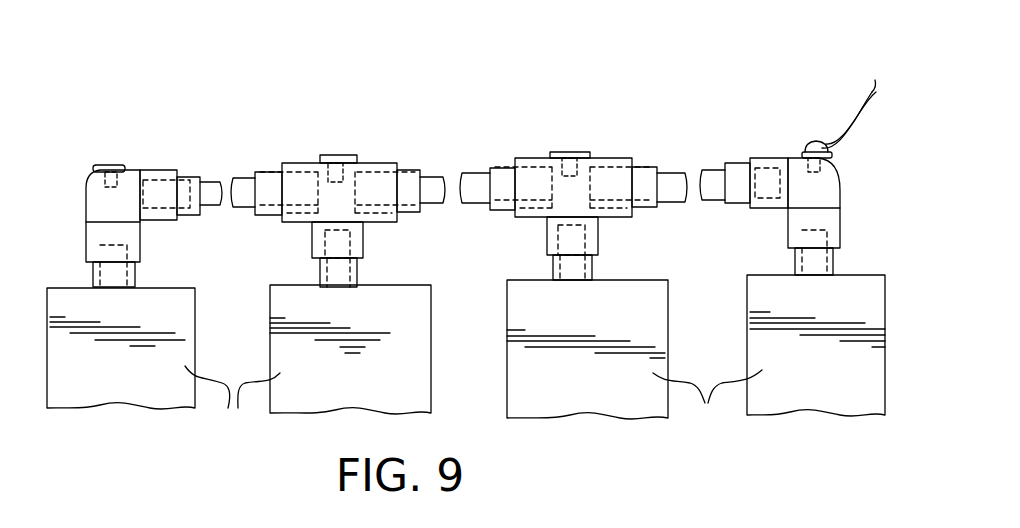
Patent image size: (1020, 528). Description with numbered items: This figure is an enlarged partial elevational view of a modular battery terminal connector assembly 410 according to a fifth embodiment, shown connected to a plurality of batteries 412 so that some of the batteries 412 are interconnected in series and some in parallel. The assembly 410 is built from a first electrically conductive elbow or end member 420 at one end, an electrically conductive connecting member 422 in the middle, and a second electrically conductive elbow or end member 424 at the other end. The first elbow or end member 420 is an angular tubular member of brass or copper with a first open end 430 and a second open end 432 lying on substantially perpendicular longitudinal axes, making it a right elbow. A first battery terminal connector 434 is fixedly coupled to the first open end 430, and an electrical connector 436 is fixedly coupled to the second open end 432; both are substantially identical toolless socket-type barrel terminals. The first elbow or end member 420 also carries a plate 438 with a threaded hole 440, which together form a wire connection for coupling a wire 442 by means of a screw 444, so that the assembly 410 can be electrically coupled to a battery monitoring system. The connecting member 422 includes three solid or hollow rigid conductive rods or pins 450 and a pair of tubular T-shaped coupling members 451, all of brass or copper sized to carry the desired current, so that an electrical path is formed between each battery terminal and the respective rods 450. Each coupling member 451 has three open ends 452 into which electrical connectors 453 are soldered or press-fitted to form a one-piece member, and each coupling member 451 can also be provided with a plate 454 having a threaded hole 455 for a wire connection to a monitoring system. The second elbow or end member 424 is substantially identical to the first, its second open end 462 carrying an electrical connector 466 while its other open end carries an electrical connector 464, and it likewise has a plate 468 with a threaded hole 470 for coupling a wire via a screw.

The modular battery terminal connector assembly 410 is at (472, 74).
The batteries 412 is at (466, 358).
The first electrically conductive elbow or end member 420 is at (785, 226).
The electrically conductive connecting member 422 is at (506, 130).
The second electrically conductive elbow or end member 424 is at (145, 243).
The first open end 430 is at (795, 264).
The second open end 432 is at (750, 160).
The first battery terminal connector 434 is at (835, 264).
The electrical connector 436 is at (712, 168).
The plate 438 is at (835, 160).
The threaded hole 440 is at (803, 166).
The wire 442 is at (868, 90).
The screw 444 is at (815, 142).
The conductive rods or pins 450 is at (213, 170).
The T-shaped coupling members 451 is at (378, 162).
The open ends 452 is at (286, 224).
The electrical connectors 453 is at (265, 172).
The plate 454 is at (320, 158).
The threaded hole 455 is at (338, 163).
The second open end 462 is at (178, 170).
The electrical connector 464 is at (93, 278).
The electrical connector 466 is at (192, 216).
The plate 468 is at (110, 165).
The threaded hole 470 is at (97, 178).